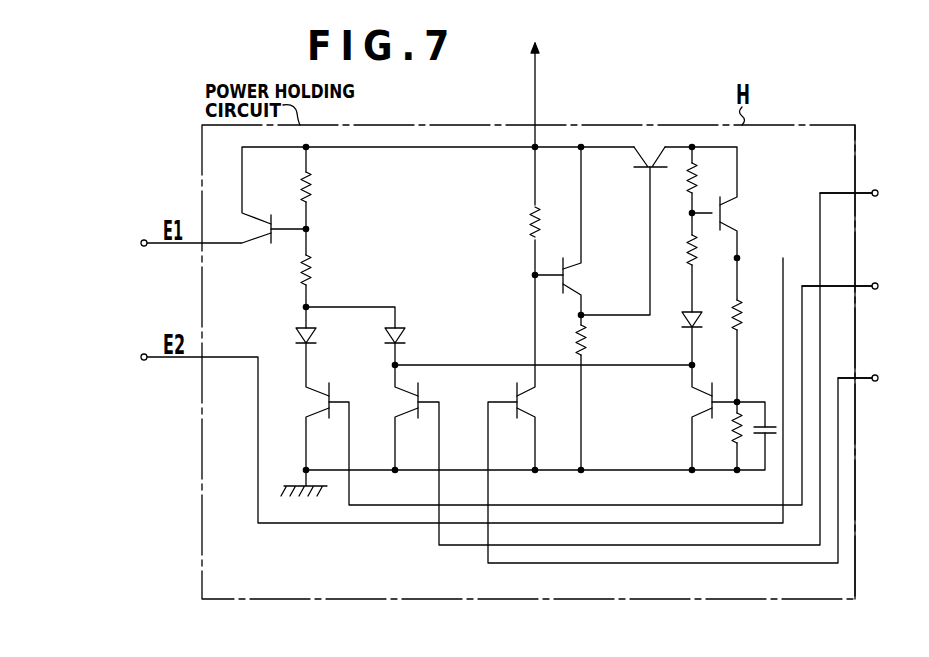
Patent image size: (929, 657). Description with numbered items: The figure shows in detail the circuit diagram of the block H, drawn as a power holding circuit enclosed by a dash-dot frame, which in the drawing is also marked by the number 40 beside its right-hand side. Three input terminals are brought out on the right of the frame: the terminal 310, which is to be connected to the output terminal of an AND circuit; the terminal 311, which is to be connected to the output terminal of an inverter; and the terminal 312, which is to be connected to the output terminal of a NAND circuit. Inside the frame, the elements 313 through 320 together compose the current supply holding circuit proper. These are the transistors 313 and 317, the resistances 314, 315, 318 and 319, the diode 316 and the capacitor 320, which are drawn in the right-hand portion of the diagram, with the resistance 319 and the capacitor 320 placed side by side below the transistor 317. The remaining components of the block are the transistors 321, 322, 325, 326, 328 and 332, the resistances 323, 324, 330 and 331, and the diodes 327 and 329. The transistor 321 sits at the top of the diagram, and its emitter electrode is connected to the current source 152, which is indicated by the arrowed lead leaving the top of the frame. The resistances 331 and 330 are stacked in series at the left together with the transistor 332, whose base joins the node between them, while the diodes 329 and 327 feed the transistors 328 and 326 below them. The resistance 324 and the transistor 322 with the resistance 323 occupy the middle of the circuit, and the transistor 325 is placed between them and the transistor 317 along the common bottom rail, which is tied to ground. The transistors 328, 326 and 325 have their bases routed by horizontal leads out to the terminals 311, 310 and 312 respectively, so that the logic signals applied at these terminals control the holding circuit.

The current source 152 is at (572, 61).
The terminal 310 is at (870, 194).
The terminal 311 is at (861, 287).
The terminal 312 is at (878, 378).
The transistor 313 is at (743, 214).
The resistance 314 is at (709, 180).
The resistance 315 is at (709, 250).
The diode 316 is at (677, 322).
The transistor 317 is at (708, 401).
The resistance 318 is at (755, 317).
The resistance 319 is at (720, 432).
The capacitor 320 is at (769, 440).
The transistor 321 is at (644, 165).
The transistor 322 is at (568, 276).
The resistance 323 is at (598, 341).
The resistance 324 is at (517, 223).
The transistor 325 is at (520, 401).
The transistor 326 is at (416, 401).
The diode 327 is at (412, 336).
The transistor 328 is at (322, 401).
The diode 329 is at (289, 336).
The resistance 330 is at (323, 272).
The resistance 331 is at (323, 186).
The transistor 332 is at (267, 246).
The power holding circuit 40 is at (892, 362).